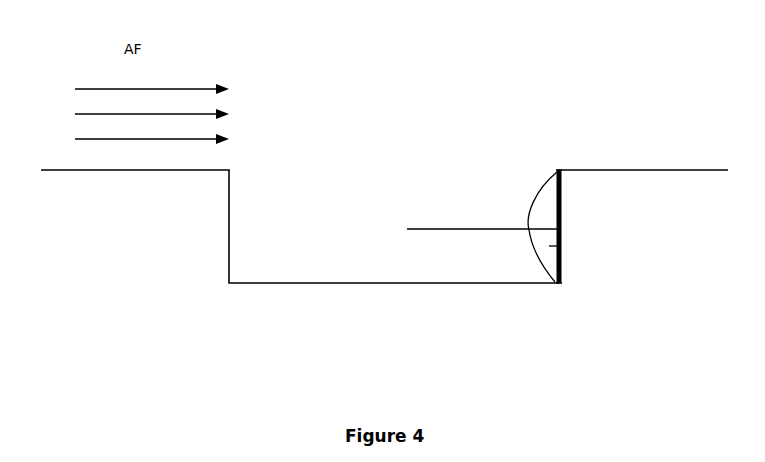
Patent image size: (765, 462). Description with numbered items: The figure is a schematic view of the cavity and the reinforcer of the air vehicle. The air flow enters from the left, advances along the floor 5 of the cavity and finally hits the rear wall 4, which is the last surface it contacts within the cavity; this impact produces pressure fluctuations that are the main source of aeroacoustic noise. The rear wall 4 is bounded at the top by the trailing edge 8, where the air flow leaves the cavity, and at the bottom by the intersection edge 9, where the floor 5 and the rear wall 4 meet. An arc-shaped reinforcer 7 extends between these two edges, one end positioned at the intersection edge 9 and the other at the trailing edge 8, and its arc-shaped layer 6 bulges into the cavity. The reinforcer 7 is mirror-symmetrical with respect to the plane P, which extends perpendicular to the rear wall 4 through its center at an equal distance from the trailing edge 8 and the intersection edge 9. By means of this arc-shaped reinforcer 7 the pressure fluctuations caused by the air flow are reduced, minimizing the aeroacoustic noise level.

The rear wall 4 is at (562, 270).
The floor 5 is at (365, 283).
The arc-shaped layer 6 is at (548, 188).
The reinforcer 7 is at (552, 246).
The trailing edge 8 is at (558, 170).
The intersection edge 9 is at (554, 284).
The plane P is at (462, 229).